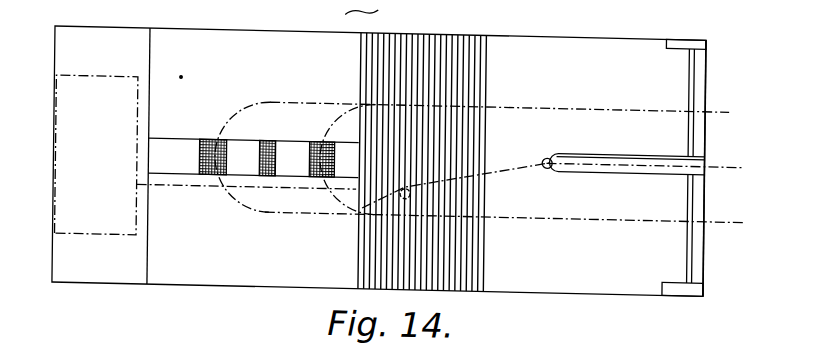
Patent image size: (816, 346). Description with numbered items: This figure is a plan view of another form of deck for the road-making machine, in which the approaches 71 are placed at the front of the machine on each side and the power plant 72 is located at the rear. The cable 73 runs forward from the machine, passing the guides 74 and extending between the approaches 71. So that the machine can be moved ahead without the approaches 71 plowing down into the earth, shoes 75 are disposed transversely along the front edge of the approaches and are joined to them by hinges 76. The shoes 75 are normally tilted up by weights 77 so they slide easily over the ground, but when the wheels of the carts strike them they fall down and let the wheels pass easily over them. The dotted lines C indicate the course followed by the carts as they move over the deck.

The approaches 71 is at (490, 35).
The power plant 72 is at (96, 155).
The cable 73 is at (197, 188).
The guides 74 is at (364, 201).
The shoes 75 is at (706, 243).
The hinges 76 is at (692, 235).
The weights 77 is at (680, 273).
The dotted lines C is at (264, 207).